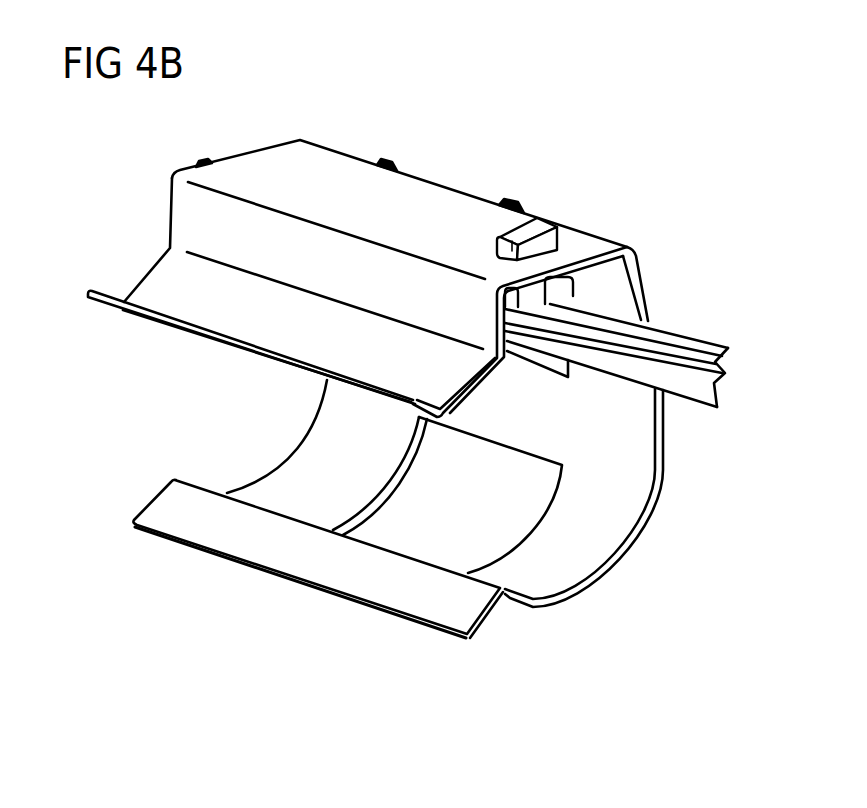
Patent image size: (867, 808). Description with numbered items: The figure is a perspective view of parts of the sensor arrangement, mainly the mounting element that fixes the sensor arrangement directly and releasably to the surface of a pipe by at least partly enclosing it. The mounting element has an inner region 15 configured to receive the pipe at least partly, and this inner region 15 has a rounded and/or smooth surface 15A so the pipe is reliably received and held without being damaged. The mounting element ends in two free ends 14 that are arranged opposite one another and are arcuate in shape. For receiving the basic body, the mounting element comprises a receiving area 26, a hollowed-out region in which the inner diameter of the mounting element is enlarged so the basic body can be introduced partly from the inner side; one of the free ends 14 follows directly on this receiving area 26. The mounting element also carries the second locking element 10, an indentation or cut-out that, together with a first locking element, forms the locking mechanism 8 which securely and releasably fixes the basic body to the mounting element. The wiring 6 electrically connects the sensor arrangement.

The wiring 6 is at (693, 387).
The locking mechanism 8 is at (480, 233).
The second locking element 10 is at (560, 253).
The free ends 14 is at (123, 312).
The inner region 15 is at (208, 426).
The rounded and/or smooth surface 15A is at (600, 568).
The receiving area 26 is at (593, 293).